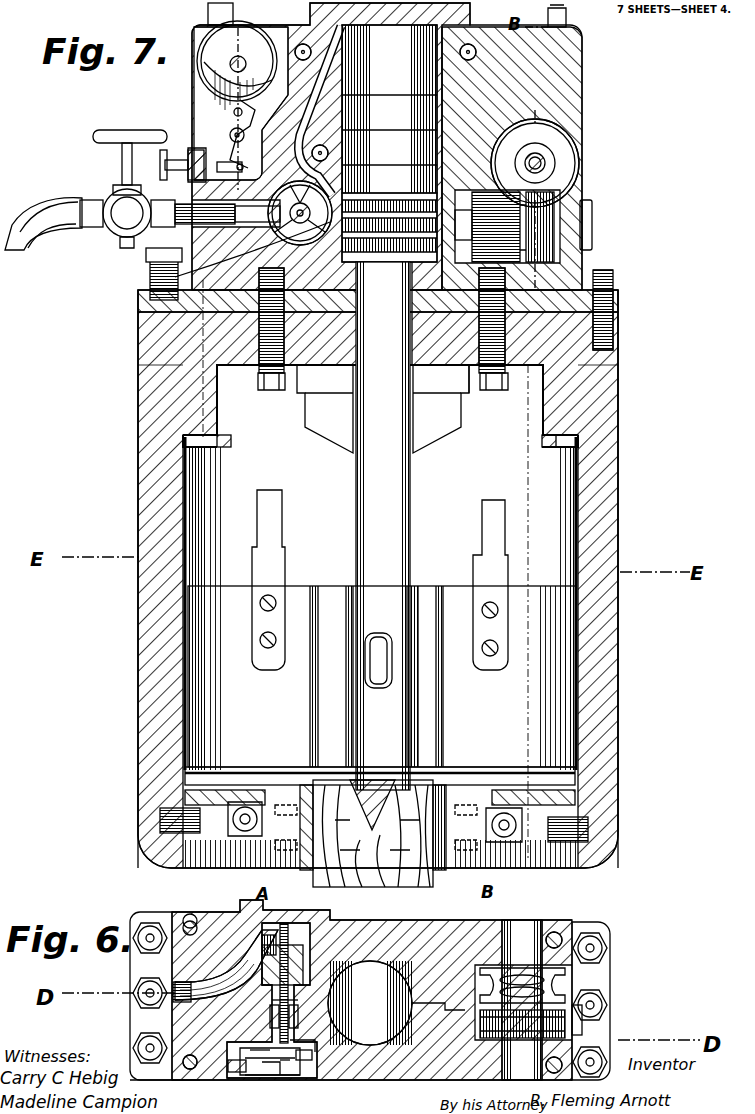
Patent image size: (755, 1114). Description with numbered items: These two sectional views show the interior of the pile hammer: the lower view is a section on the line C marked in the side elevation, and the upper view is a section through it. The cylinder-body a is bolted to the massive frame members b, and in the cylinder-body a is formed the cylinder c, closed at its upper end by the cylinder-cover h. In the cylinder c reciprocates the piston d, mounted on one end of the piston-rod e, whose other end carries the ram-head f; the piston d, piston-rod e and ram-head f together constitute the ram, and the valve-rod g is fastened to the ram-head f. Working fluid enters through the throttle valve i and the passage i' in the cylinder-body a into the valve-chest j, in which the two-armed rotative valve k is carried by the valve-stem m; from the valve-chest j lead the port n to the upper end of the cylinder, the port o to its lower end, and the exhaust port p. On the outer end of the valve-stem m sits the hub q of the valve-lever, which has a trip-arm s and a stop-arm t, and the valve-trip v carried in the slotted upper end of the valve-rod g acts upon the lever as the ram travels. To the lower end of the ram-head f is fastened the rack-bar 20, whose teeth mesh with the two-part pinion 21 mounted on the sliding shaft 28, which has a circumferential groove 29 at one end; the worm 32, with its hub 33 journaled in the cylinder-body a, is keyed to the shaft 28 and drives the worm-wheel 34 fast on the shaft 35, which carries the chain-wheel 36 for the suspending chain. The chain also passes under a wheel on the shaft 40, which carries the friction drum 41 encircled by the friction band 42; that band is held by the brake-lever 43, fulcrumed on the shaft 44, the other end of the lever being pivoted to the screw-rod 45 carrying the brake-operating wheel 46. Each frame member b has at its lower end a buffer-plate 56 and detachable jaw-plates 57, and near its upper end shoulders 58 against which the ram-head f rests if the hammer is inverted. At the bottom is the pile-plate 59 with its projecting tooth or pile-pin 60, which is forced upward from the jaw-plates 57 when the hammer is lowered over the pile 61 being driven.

In FIG. 7, the shaft 40 is at (240, 55).
In FIG. 7, the friction drum 41 is at (222, 48).
In FIG. 7, the friction band 42 is at (206, 75).
In FIG. 7, the brake-lever 43 is at (229, 135).
In FIG. 7, the shaft 44 is at (198, 130).
In FIG. 7, the screw-rod 45 is at (215, 172).
In FIG. 7, the brake-operating wheel 46 is at (172, 165).
In FIG. 7, the circumferential groove 29 is at (525, 163).
In FIG. 7, the shaft 35 is at (545, 160).
In FIG. 6, the shaft 35 is at (530, 1050).
In FIG. 7, the worm-wheel 34 is at (555, 175).
In FIG. 6, the worm-wheel 34 is at (560, 1025).
In FIG. 7, the hub 33 is at (565, 202).
In FIG. 7, the worm 32 is at (558, 228).
In FIG. 7, the pinion 21 is at (605, 285).
In FIG. 7, the shaft 28 is at (440, 395).
In FIG. 7, the rack-bar 20 is at (506, 528).
In FIG. 7, the shoulders 58 is at (220, 440).
In FIG. 7, the buffer-plate 56 is at (185, 797).
In FIG. 7, the jaw-plates 57 is at (300, 830).
In FIG. 7, the pile-plate 59 is at (306, 860).
In FIG. 7, the tooth or pile-pin 60 is at (355, 860).
In FIG. 7, the pile 61 is at (385, 865).
In FIG. 6, the chain-wheel 36 is at (565, 978).
In FIG. 7, the cylinder-body a is at (505, 80).
In FIG. 6, the cylinder-body a is at (245, 1080).
In FIG. 7, the frame members b is at (180, 420).
In FIG. 7, the cylinder c is at (389, 109).
In FIG. 7, the piston d is at (388, 198).
In FIG. 7, the piston-rod e is at (383, 526).
In FIG. 7, the ram-head f is at (220, 677).
In FIG. 7, the valve-rod g is at (280, 516).
In FIG. 7, the cylinder-cover h is at (560, 14).
In FIG. 7, the throttle valve i is at (90, 190).
In FIG. 6, the throttle valve i is at (196, 1044).
In FIG. 7, the passage i' is at (222, 225).
In FIG. 6, the passage i' is at (257, 983).
In FIG. 7, the valve-chest j is at (150, 292).
In FIG. 7, the two-armed rotative valve k is at (373, 849).
In FIG. 7, the valve-stem m is at (170, 277).
In FIG. 7, the port n is at (352, 95).
In FIG. 7, the port o is at (346, 175).
In FIG. 7, the exhaust port p is at (350, 140).
In FIG. 6, the trip-arm s is at (225, 1070).
In FIG. 6, the stop-arm t is at (305, 1075).
In FIG. 6, the valve-trip v is at (258, 1075).
In FIG. 6, the hub q is at (280, 1075).
In FIG. 6, the section line C— C is at (396, 1003).